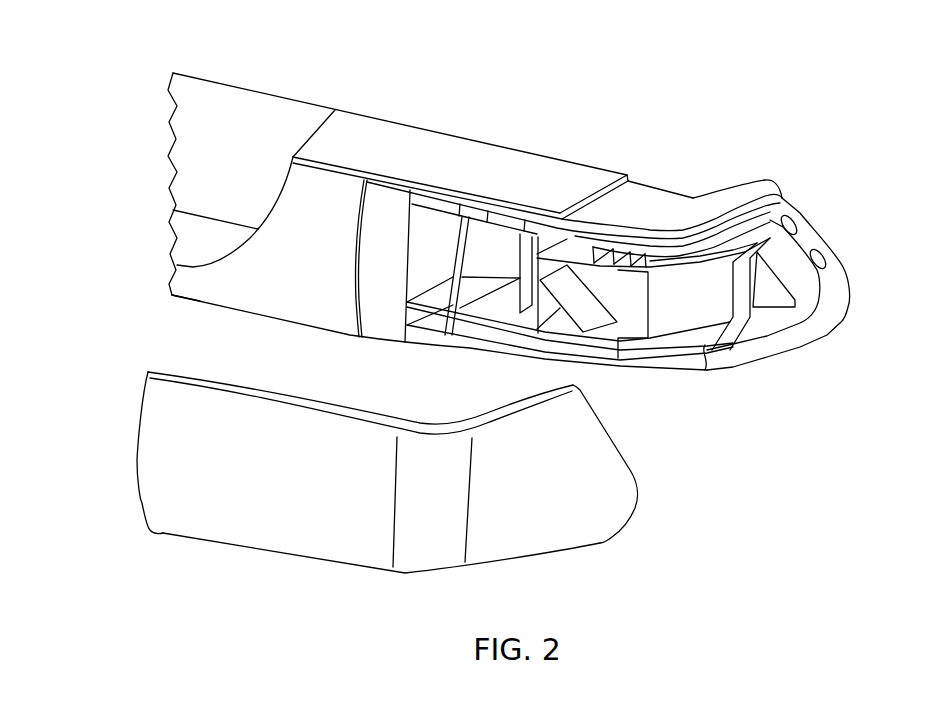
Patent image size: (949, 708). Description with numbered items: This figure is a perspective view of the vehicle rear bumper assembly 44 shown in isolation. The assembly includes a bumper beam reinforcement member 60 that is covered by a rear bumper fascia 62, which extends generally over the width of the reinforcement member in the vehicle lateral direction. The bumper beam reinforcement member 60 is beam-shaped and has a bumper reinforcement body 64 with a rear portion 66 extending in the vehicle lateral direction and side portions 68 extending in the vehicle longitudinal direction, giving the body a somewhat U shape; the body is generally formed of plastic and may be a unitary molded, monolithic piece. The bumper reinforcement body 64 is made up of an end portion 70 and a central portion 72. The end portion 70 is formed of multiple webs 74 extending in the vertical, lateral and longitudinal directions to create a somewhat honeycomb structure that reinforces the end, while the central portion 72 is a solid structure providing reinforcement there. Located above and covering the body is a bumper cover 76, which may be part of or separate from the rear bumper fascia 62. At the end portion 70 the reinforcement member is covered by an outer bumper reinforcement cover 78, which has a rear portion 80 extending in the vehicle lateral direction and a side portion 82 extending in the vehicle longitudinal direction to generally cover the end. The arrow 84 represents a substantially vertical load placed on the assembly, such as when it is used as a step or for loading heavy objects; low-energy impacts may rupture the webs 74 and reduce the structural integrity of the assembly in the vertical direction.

The vehicle rear bumper assembly 44 is at (647, 107).
The bumper beam reinforcement member 60 is at (830, 228).
The rear bumper fascia 62 is at (325, 218).
The bumper reinforcement body 64 is at (446, 350).
The rear portion 66 is at (182, 302).
The side portions 68 is at (852, 261).
The end portion 70 is at (773, 328).
The central portion 72 is at (383, 322).
The webs 74 is at (519, 263).
The bumper cover 76 is at (670, 185).
The outer bumper reinforcement cover 78 is at (288, 567).
The rear portion 80 is at (162, 535).
The side portion 82 is at (577, 525).
The arrow 84 is at (586, 150).